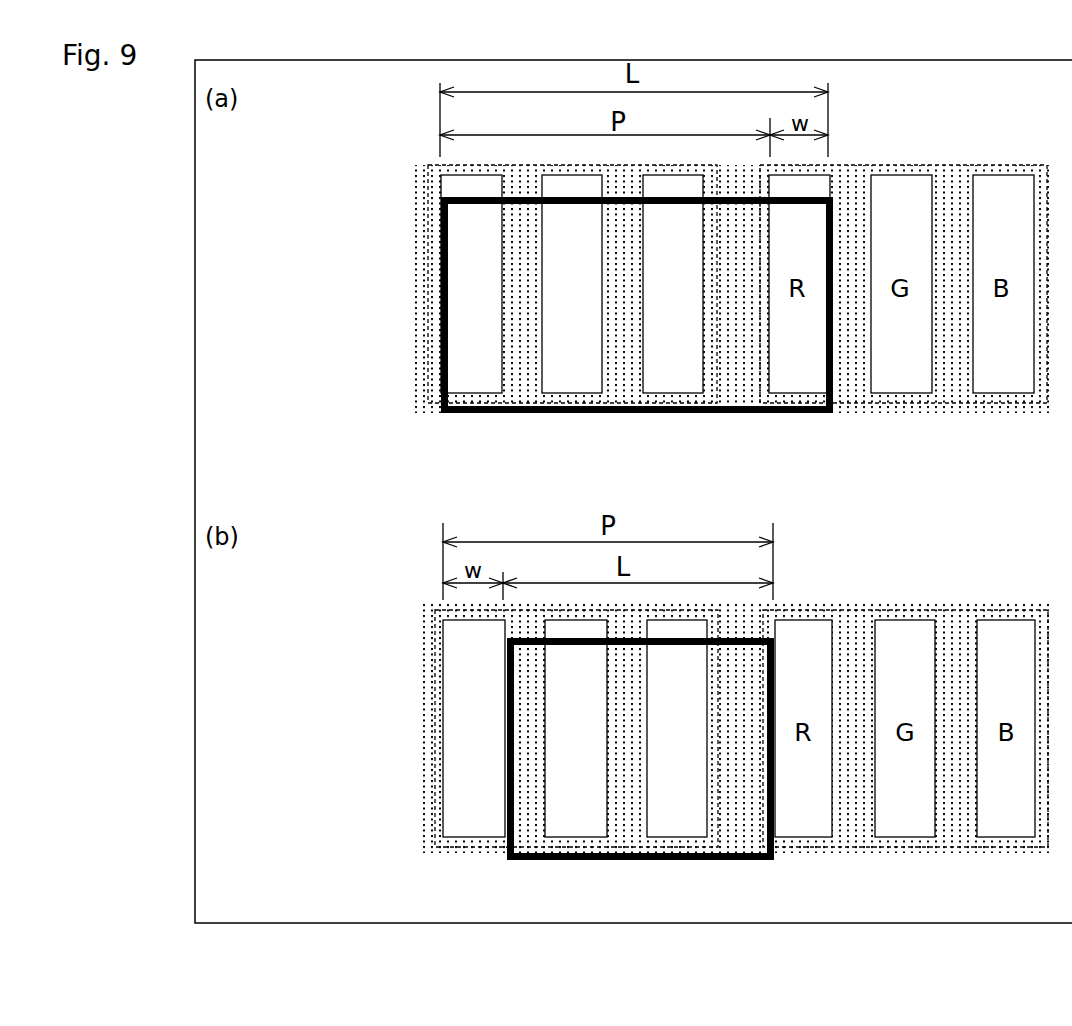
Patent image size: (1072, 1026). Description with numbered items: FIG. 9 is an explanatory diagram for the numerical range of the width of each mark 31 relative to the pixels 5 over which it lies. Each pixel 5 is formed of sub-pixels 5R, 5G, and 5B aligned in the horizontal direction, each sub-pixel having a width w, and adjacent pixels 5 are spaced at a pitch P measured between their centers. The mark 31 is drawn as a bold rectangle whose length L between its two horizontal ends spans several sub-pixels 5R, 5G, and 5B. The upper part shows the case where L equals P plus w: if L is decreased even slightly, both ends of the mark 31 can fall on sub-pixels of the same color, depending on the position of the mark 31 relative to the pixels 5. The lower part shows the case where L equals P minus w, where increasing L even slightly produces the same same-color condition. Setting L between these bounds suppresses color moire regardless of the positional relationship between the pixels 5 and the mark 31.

The pixel 5 is at (422, 172).
The sub-pixel 5R is at (467, 367).
The sub-pixel 5G is at (562, 367).
The sub-pixel 5B is at (670, 367).
The mark 31 is at (473, 317).